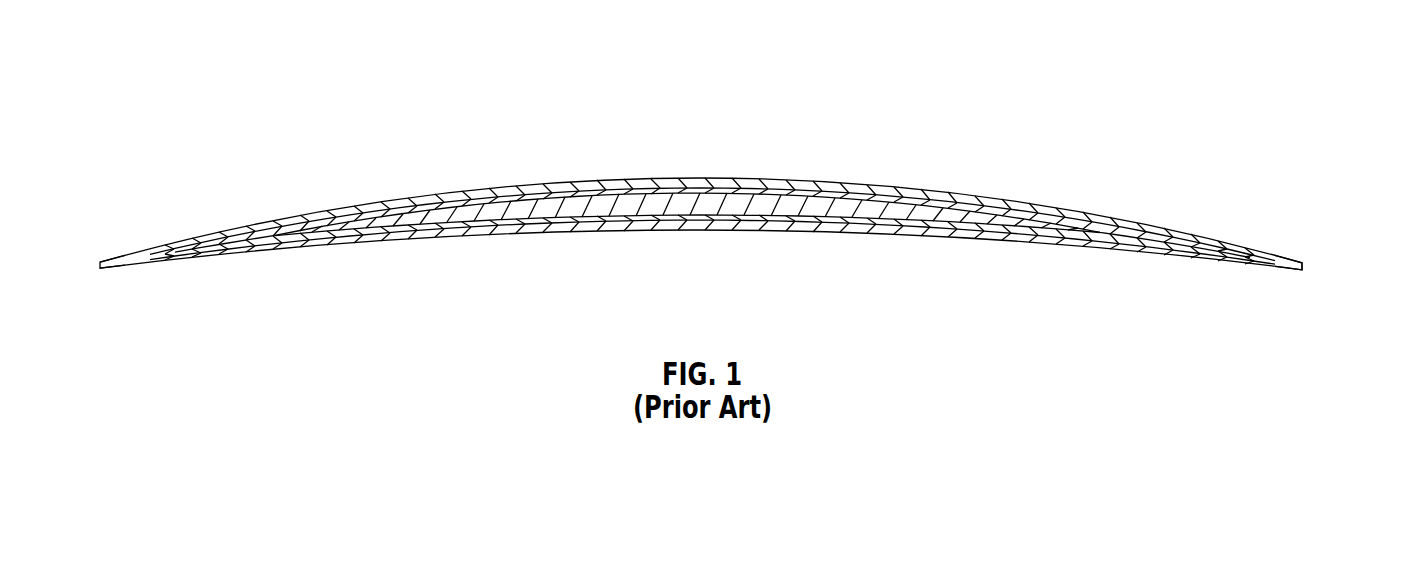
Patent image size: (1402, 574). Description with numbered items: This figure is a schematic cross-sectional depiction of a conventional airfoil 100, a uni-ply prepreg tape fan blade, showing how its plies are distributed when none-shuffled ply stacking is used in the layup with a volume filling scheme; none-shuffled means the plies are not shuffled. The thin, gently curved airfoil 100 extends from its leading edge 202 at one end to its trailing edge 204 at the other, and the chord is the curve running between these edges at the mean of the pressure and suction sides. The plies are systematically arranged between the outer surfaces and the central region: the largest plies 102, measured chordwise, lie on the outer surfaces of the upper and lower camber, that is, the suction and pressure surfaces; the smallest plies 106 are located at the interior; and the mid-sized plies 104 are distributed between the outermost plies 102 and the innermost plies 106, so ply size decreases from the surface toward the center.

The airfoil 100 is at (183, 99).
The largest plies 102 is at (682, 183).
The mid-sized plies 104 is at (781, 190).
The smallest plies 106 is at (901, 212).
The leading edge 202 is at (100, 264).
The trailing edge 204 is at (1304, 266).